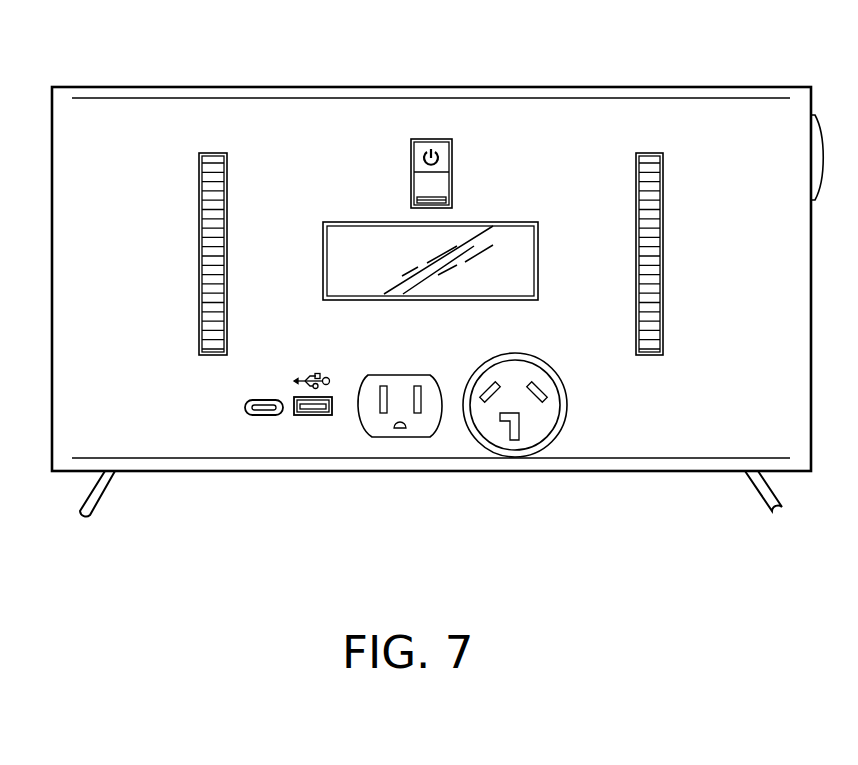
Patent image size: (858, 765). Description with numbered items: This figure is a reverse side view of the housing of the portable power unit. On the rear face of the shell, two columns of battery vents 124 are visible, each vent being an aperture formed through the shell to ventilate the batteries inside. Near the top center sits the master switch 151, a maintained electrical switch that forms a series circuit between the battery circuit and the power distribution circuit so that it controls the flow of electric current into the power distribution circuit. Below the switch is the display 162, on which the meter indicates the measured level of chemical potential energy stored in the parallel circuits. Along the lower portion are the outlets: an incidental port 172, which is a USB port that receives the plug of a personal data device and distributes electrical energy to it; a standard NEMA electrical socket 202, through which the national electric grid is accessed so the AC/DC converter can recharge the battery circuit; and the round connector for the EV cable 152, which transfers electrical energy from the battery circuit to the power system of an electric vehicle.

The battery vent 124 is at (210, 245).
The master switch 151 is at (431, 150).
The display 162 is at (516, 238).
The incidental port 172 is at (313, 415).
The NEMA 5-15P electrical socket 202 is at (398, 437).
The EV cable 152 is at (540, 422).